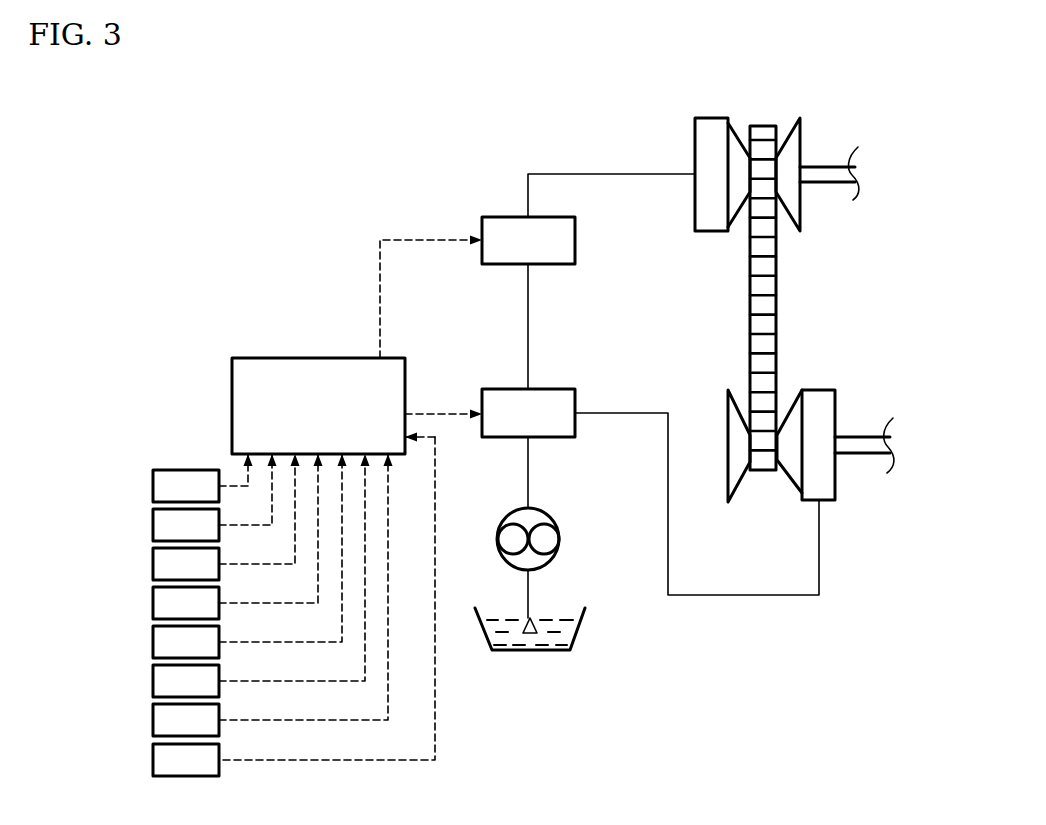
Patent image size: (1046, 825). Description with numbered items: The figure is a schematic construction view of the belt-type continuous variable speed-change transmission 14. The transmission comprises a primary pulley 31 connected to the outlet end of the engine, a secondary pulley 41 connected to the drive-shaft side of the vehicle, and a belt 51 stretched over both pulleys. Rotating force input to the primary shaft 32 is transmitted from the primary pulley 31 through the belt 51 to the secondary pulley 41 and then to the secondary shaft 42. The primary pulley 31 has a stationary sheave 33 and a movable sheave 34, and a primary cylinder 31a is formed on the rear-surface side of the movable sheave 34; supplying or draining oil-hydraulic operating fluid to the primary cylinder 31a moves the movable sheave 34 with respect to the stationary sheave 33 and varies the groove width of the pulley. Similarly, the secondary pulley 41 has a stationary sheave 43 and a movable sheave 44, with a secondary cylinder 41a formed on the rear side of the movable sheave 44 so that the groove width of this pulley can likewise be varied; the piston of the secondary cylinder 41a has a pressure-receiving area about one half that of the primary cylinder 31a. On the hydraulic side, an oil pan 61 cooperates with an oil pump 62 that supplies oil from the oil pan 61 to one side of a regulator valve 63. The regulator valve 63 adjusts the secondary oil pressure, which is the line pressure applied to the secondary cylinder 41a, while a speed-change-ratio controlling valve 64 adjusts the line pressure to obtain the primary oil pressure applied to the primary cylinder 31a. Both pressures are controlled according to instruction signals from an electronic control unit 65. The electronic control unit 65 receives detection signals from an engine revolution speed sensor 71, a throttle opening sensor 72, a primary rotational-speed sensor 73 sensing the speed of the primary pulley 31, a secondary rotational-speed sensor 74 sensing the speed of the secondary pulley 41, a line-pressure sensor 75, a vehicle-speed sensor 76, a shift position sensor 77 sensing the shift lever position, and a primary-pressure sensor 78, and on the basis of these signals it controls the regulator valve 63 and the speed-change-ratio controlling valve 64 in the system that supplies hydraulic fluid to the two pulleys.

The belt-type continuous variable speed-change transmission 14 is at (808, 246).
The primary pulley 31 is at (767, 128).
The primary cylinder 31a is at (712, 117).
The primary shaft 32 is at (823, 172).
The stationary sheave 33 is at (803, 143).
The movable sheave 34 is at (737, 160).
The secondary pulley 41 is at (787, 437).
The secondary cylinder 41a is at (835, 477).
The secondary shaft 42 is at (845, 428).
The stationary sheave 43 is at (738, 437).
The movable sheave 44 is at (793, 462).
The belt 51 is at (785, 281).
The oil pan 61 is at (576, 632).
The oil pump 62 is at (556, 522).
The regulator valve 63 is at (500, 388).
The speed-change-ratio controlling valve 64 is at (575, 240).
The electronic control unit 65 is at (305, 358).
The engine revolution speed sensor 71 is at (153, 487).
The throttle opening sensor 72 is at (153, 526).
The primary rotational-speed sensor 73 is at (153, 565).
The secondary rotational-speed sensor 74 is at (153, 604).
The line-pressure sensor 75 is at (153, 643).
The vehicle-speed sensor 76 is at (153, 682).
The shift position sensor 77 is at (153, 721).
The primary-pressure sensor 78 is at (153, 761).